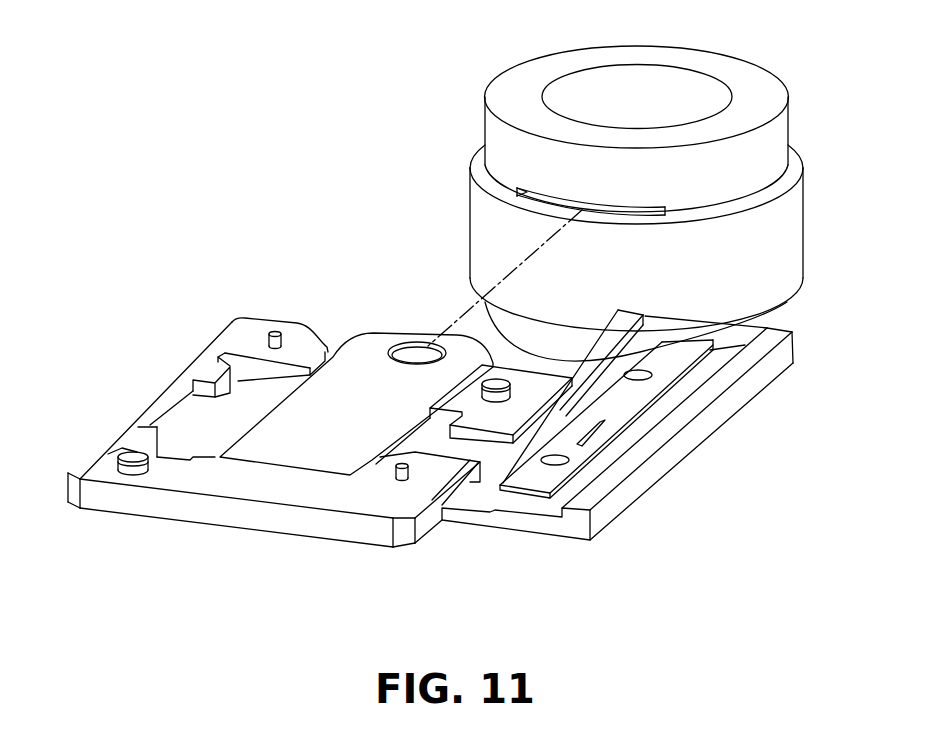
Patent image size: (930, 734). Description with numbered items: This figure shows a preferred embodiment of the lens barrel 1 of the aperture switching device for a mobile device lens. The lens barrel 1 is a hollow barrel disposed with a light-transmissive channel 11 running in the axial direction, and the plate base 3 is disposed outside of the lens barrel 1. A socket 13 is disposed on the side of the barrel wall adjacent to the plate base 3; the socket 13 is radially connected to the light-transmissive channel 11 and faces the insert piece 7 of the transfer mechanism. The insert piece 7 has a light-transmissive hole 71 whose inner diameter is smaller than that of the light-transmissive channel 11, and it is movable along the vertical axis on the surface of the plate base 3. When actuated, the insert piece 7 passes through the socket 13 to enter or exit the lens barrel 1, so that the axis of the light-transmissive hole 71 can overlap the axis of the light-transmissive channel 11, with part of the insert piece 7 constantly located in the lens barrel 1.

The lens barrel 1 is at (486, 73).
The light-transmissive channel 11 is at (575, 82).
The socket 13 is at (517, 195).
The plate base 3 is at (120, 411).
The insert piece 7 is at (368, 343).
The light-transmissive hole 71 is at (413, 352).